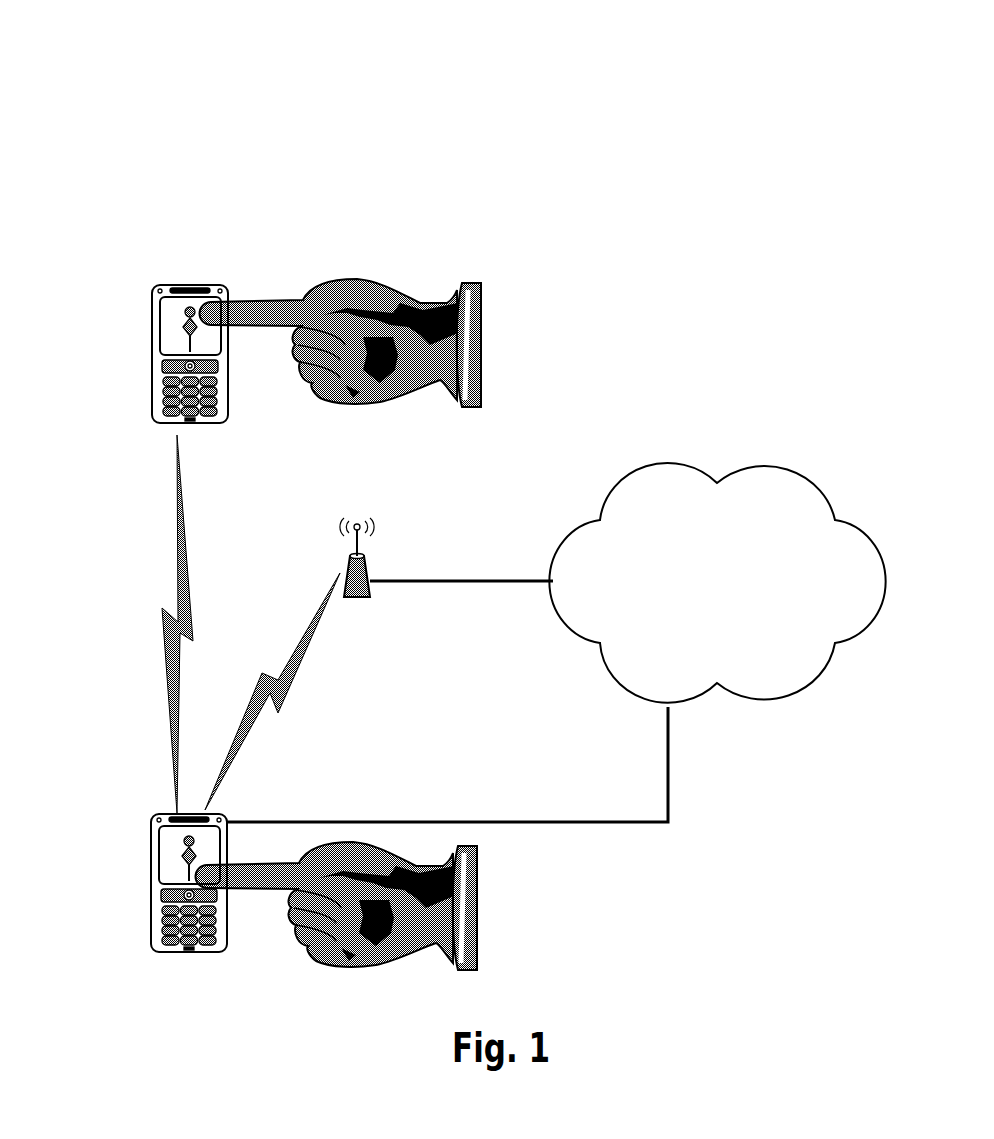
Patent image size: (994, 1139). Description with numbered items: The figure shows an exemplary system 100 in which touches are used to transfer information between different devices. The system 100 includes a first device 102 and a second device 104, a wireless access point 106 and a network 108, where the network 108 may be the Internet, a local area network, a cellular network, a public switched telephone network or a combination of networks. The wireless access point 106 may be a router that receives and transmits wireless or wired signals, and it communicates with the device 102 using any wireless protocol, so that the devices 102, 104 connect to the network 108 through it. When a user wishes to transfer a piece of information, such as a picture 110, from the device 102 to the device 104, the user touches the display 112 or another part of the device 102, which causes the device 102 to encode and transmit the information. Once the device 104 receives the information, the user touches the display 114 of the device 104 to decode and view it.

The system 100 is at (450, 98).
The device 102 is at (152, 820).
The device 104 is at (208, 283).
The wireless access point 106 is at (363, 553).
The network 108 is at (668, 457).
The picture 110 is at (133, 858).
The display 112 is at (145, 886).
The display 114 is at (174, 327).